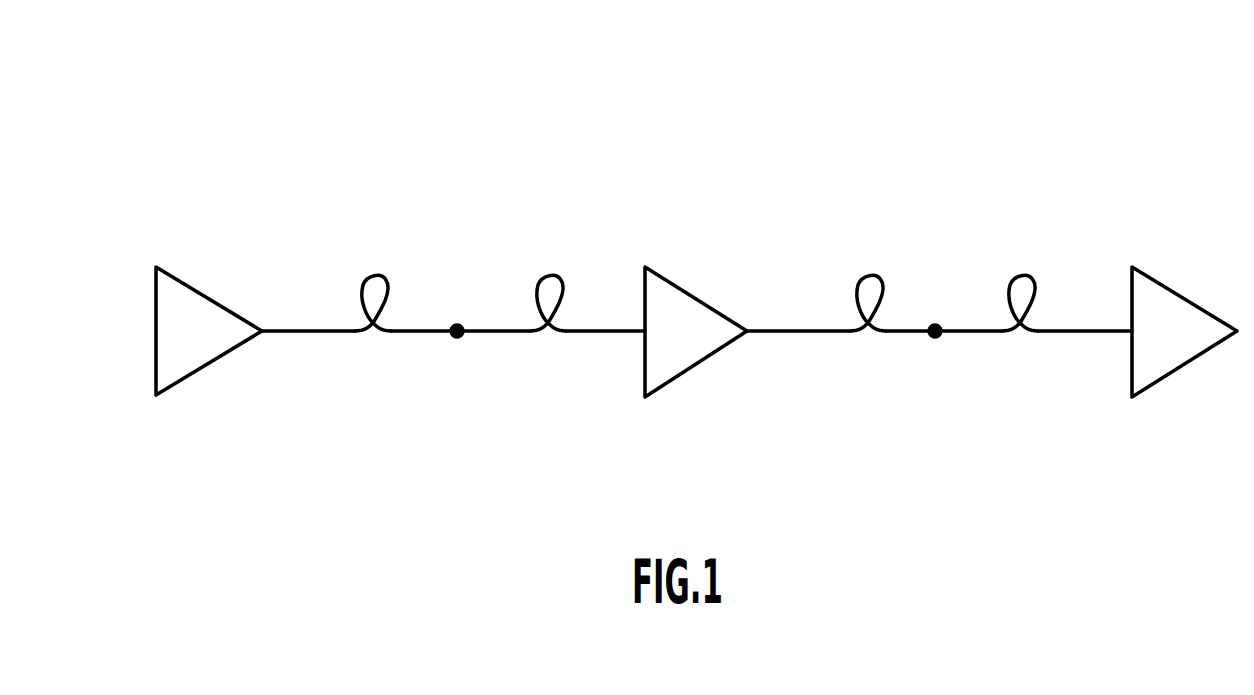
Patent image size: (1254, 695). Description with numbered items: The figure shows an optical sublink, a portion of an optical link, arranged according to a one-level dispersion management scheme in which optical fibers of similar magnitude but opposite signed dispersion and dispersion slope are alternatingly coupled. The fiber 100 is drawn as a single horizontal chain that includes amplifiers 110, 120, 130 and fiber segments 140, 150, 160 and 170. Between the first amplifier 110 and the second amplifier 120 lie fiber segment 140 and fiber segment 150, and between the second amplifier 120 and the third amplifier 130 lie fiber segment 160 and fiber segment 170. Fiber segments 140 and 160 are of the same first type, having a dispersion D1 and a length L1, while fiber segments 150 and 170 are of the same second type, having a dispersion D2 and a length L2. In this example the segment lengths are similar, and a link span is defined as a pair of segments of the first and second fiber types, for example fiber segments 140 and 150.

The fiber 100 is at (935, 112).
The amplifier 110 is at (205, 363).
The amplifier 120 is at (690, 365).
The amplifier 130 is at (1173, 372).
The fiber segment 140 is at (373, 338).
The fiber segment 150 is at (540, 338).
The fiber segment 160 is at (857, 338).
The fiber segment 170 is at (1027, 338).